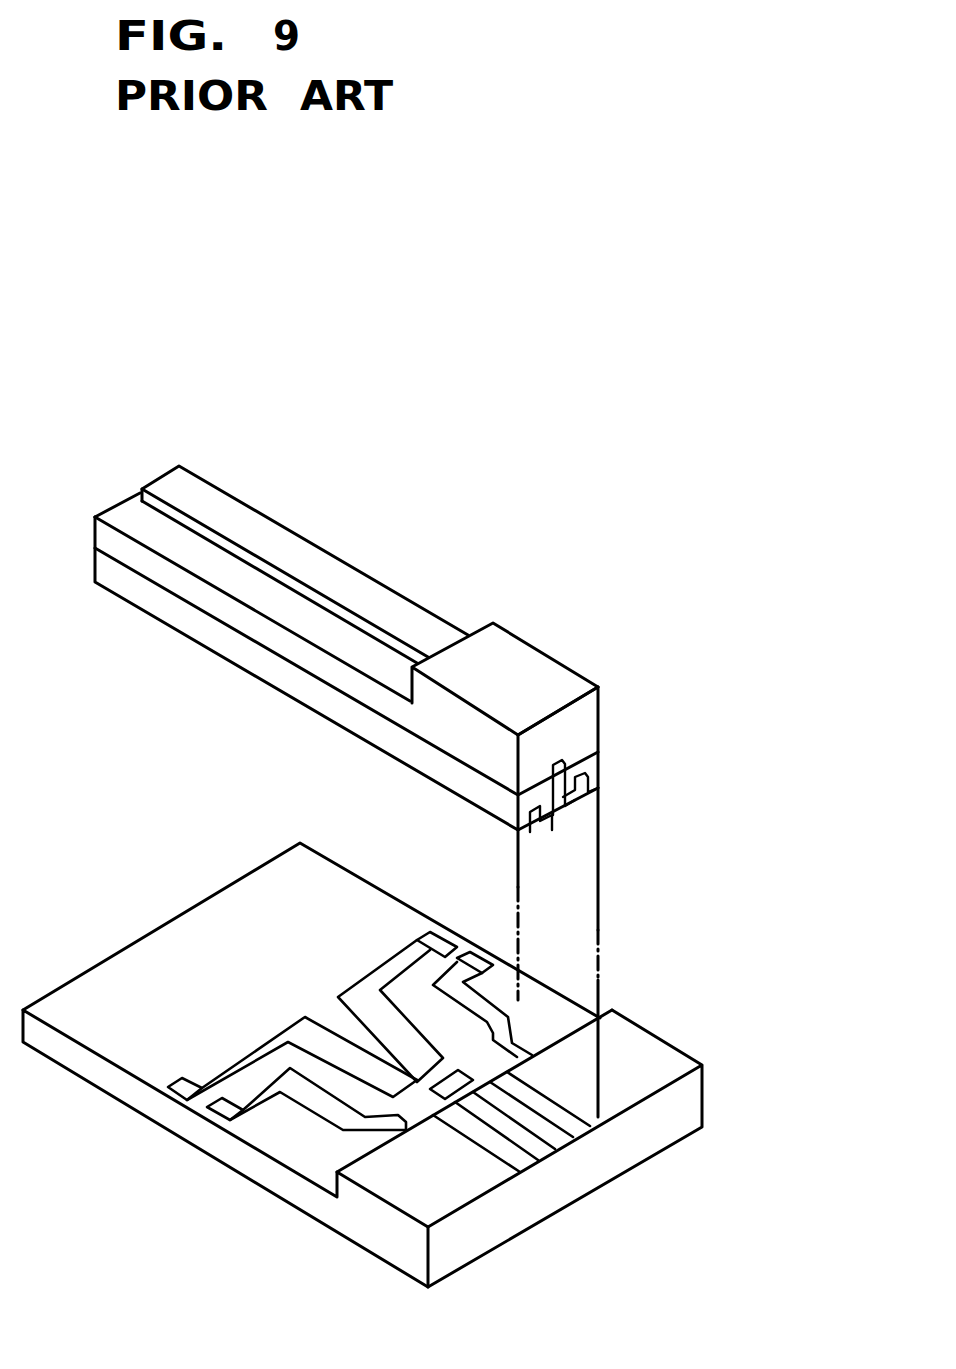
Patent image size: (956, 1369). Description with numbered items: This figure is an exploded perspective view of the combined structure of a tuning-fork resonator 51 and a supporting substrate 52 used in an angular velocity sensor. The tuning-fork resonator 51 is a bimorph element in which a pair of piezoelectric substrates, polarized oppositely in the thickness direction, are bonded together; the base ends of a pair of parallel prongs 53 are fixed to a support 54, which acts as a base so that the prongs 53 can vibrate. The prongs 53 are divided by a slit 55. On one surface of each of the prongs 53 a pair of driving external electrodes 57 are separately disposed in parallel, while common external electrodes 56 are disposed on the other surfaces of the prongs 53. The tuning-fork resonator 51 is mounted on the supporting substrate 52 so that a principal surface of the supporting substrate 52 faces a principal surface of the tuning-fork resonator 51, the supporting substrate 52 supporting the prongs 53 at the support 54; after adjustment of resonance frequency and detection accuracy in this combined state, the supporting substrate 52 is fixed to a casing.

The tuning-fork resonator 51 is at (123, 288).
The supporting substrate 52 is at (277, 1197).
The prongs 53 is at (114, 504).
The support 54 is at (482, 647).
The slit 55 is at (238, 552).
The common external electrodes 56 is at (297, 622).
The driving external electrodes 57 is at (530, 832).